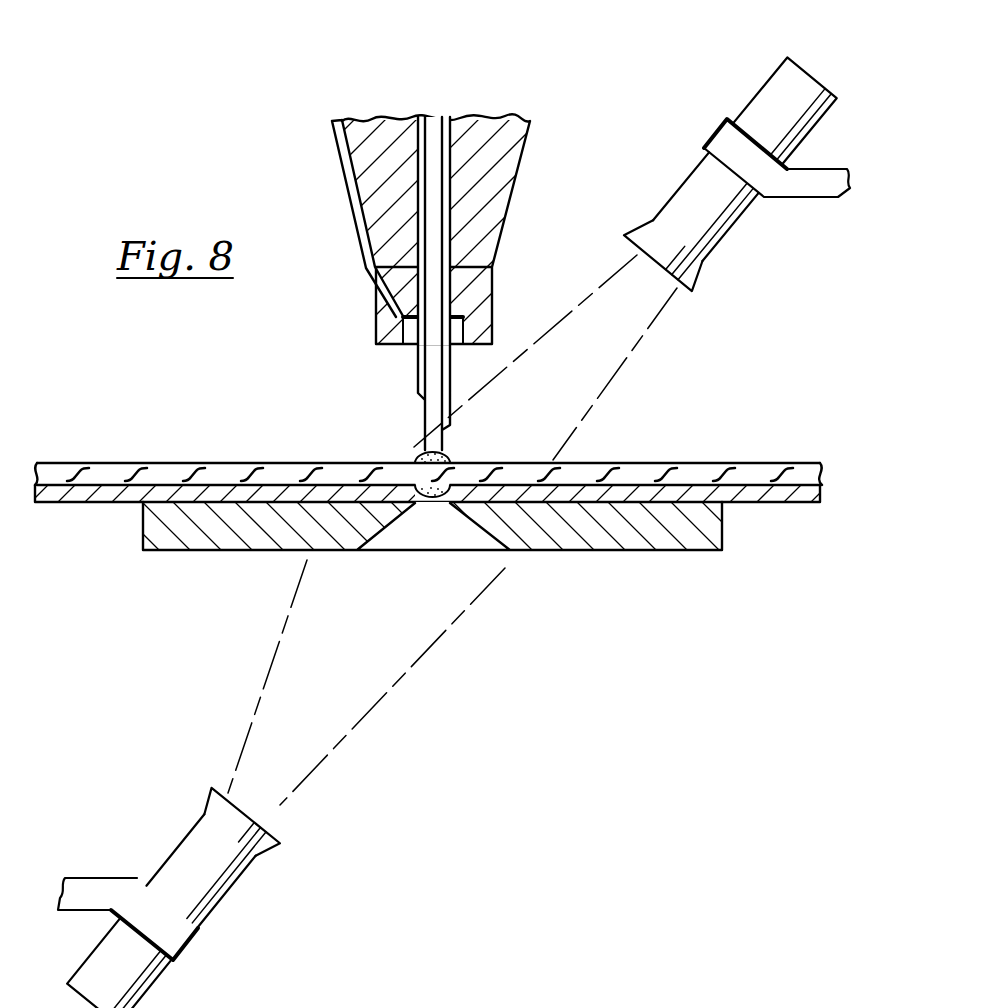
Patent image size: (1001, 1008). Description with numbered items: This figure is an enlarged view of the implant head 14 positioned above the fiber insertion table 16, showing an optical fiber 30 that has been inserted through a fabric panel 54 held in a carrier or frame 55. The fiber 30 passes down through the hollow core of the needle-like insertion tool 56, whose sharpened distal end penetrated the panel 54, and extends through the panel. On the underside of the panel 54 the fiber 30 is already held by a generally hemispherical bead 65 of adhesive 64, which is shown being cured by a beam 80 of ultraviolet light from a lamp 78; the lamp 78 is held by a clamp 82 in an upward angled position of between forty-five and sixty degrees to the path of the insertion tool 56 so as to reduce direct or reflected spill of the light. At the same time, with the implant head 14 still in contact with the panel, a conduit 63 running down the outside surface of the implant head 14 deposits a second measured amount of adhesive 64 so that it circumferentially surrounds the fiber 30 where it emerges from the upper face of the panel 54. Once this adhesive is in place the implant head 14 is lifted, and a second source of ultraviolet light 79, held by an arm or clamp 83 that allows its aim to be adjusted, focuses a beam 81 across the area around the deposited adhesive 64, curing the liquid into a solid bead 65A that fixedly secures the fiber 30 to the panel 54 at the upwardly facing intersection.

The implant head 14 is at (508, 153).
The fiber insertion table 16 is at (607, 545).
The optical fiber 30 is at (432, 122).
The fabric panel 54 is at (767, 467).
The carrier or frame 55 is at (112, 503).
The insertion tool 56 is at (448, 400).
The conduit 63 is at (343, 185).
The adhesive 64 is at (329, 104).
The bead 65 is at (424, 518).
The solid bead of adhesive 65A is at (410, 437).
The ultra-violet lamp 78 is at (186, 832).
The second source of ultra-violet light 79 is at (715, 235).
The beam of ultra-violet light 80 is at (272, 687).
The beam of ultra-violet light 81 is at (608, 336).
The clamp 82 is at (181, 956).
The arm or clamp 83 is at (724, 118).